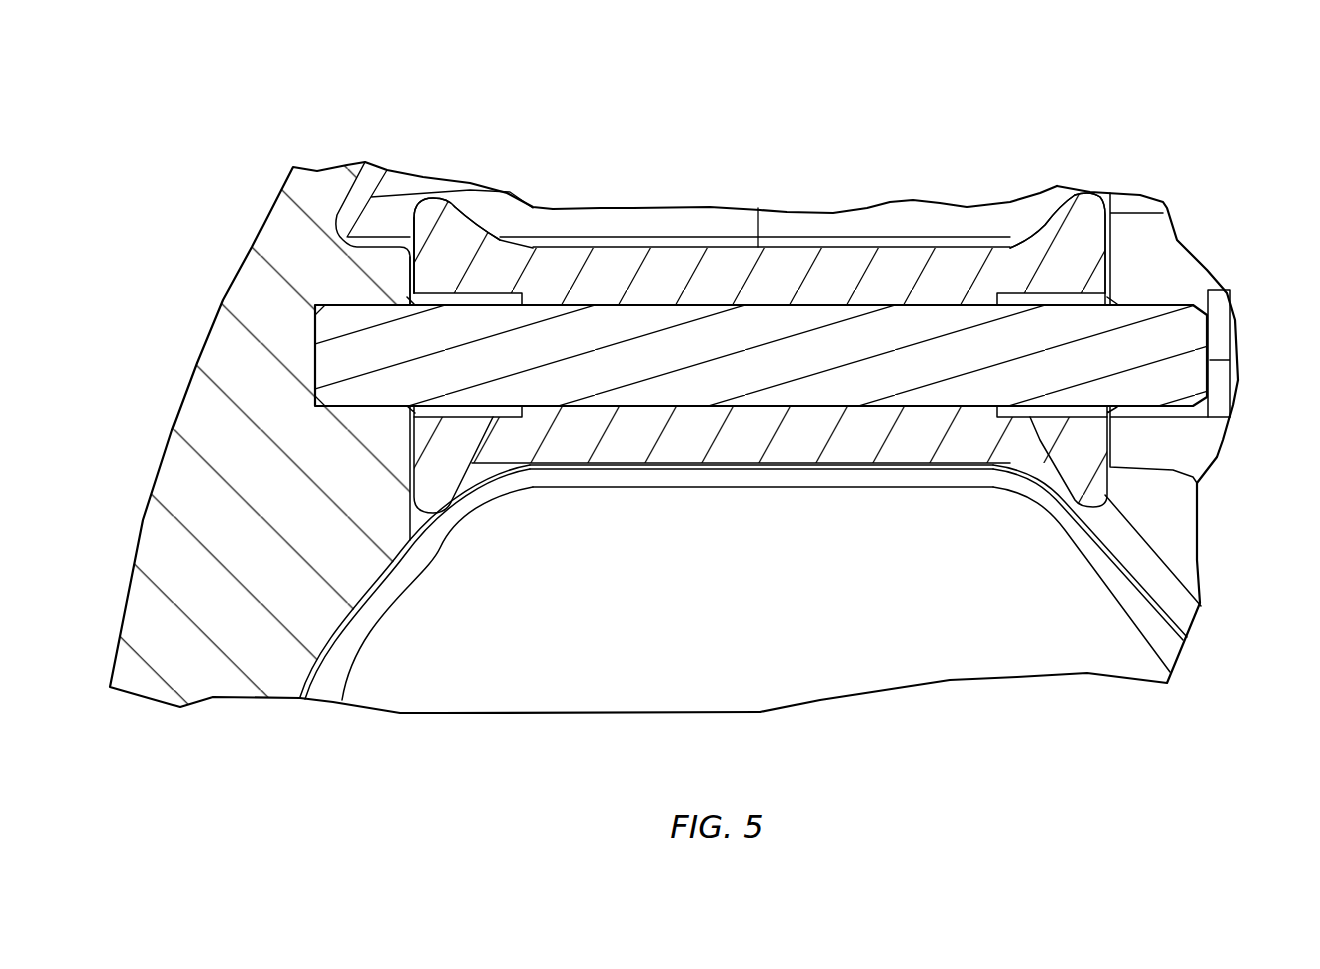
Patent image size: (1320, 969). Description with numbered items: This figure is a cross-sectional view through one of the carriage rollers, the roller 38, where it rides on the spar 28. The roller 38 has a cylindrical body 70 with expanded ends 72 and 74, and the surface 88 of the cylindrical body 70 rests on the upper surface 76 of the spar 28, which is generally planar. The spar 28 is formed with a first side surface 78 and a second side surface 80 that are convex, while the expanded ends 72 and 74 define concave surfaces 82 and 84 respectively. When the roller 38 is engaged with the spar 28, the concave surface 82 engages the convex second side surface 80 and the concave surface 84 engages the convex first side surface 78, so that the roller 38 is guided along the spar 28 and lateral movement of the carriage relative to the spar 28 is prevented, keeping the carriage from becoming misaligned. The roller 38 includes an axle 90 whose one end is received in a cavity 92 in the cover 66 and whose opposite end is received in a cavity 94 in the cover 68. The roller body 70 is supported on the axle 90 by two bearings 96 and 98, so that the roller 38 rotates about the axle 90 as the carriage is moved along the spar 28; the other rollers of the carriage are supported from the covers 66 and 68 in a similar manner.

The spar 28 is at (1160, 633).
The roller 38 is at (890, 226).
The cover 66 is at (185, 486).
The cover 68 is at (1153, 237).
The cylindrical body 70 is at (650, 272).
The expanded end 72 is at (447, 226).
The expanded end 74 is at (1085, 220).
The upper surface 76 is at (770, 463).
The first side surface 78 is at (1113, 552).
The second side surface 80 is at (363, 620).
The concave surface 82 is at (481, 223).
The concave surface 84 is at (1040, 224).
The surface 88 is at (776, 247).
The axle 90 is at (1180, 345).
The cavity 92 is at (300, 338).
The cavity 94 is at (1164, 296).
The bearing 96 is at (487, 417).
The bearing 98 is at (1027, 417).